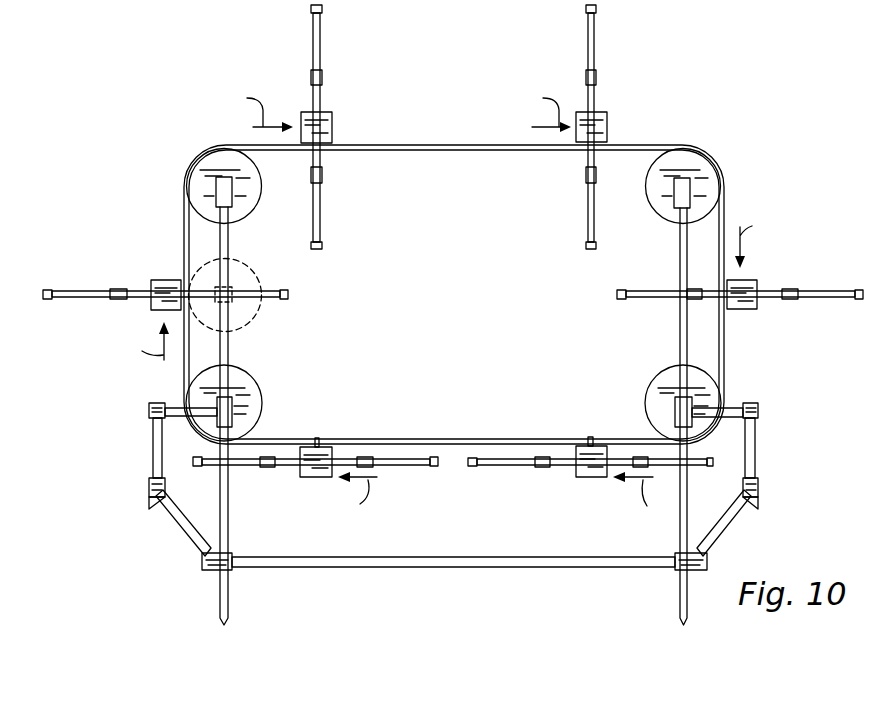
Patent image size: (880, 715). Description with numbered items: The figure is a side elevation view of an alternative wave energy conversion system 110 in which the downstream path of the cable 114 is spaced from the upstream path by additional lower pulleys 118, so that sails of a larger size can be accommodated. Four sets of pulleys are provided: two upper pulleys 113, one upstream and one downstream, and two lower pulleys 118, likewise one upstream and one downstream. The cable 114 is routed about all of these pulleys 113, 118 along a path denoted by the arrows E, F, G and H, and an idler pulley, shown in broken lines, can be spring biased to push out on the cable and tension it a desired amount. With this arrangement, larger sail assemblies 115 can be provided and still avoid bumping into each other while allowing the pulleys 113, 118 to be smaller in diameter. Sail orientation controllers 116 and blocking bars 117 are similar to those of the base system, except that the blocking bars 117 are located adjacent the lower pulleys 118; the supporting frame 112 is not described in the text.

The alternative wave energy conversion system 110 is at (174, 121).
The frame shaft 112 is at (230, 600).
The upper pulley 113 is at (243, 205).
The cable 114 is at (457, 150).
The sail assembly 115 is at (320, 55).
The sail orientation controller 116 is at (330, 133).
The blocking bar 117 is at (758, 481).
The lower pulley 118 is at (243, 393).